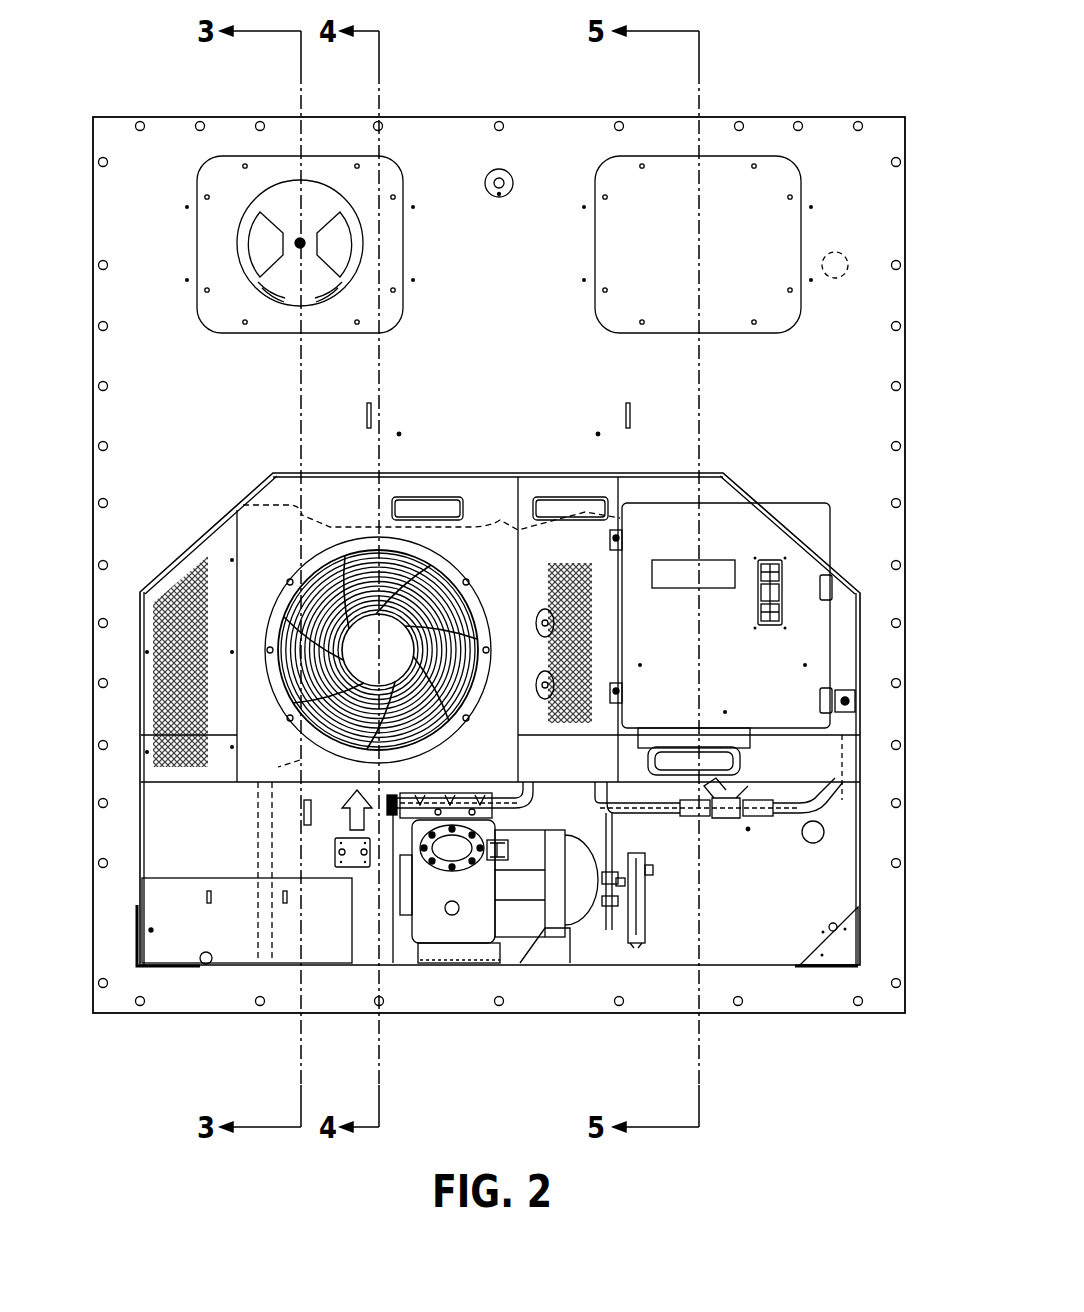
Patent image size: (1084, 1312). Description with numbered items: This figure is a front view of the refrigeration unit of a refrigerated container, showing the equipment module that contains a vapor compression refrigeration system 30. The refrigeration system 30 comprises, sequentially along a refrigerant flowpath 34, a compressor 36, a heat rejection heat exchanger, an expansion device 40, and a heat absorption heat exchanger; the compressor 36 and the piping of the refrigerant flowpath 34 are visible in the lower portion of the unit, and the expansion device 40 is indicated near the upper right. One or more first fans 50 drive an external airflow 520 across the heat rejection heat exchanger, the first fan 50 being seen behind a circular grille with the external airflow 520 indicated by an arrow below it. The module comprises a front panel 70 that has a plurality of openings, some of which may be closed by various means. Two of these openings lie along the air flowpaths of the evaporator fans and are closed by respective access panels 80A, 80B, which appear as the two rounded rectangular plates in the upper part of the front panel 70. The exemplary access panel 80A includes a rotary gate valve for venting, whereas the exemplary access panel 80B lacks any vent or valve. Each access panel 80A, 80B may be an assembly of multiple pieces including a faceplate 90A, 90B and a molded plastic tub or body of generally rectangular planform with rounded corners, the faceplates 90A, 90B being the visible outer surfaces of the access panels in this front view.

The vapor compression refrigeration system 30 is at (741, 941).
The refrigerant flowpath 34 is at (660, 827).
The compressor 36 is at (512, 905).
The expansion device 40 is at (849, 265).
The first fan 50 is at (296, 701).
The external airflow 520 is at (356, 816).
The front panel 70 is at (180, 425).
The access panel 80A is at (227, 302).
The access panel 80B is at (723, 196).
The faceplate 90A is at (219, 224).
The faceplate 90B is at (767, 230).